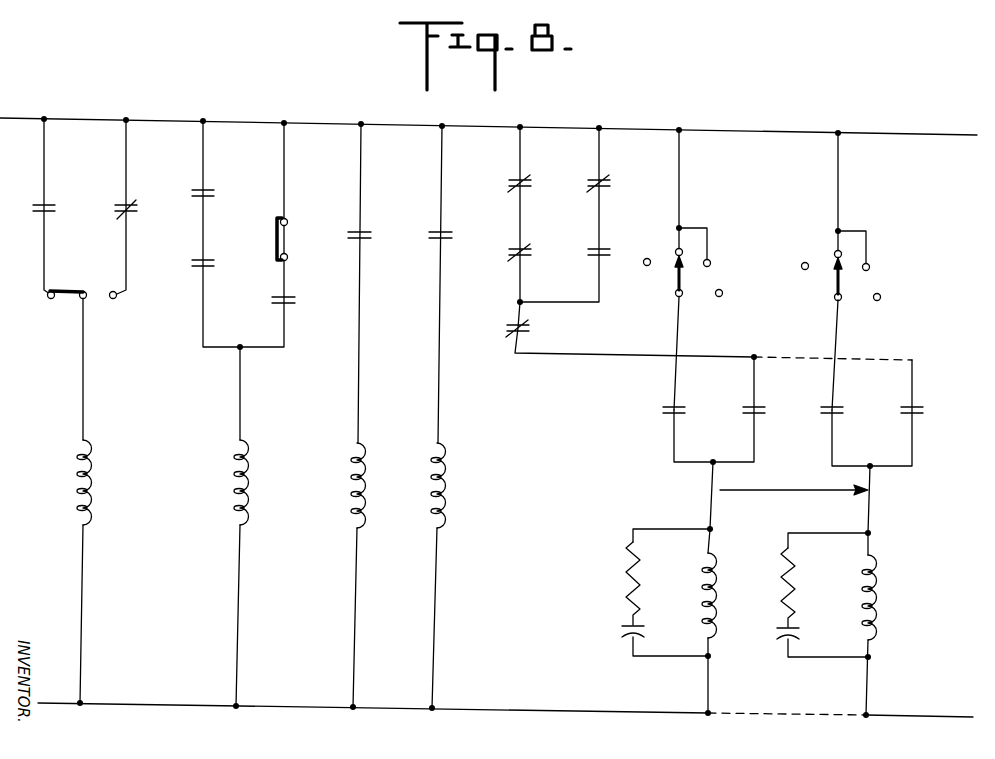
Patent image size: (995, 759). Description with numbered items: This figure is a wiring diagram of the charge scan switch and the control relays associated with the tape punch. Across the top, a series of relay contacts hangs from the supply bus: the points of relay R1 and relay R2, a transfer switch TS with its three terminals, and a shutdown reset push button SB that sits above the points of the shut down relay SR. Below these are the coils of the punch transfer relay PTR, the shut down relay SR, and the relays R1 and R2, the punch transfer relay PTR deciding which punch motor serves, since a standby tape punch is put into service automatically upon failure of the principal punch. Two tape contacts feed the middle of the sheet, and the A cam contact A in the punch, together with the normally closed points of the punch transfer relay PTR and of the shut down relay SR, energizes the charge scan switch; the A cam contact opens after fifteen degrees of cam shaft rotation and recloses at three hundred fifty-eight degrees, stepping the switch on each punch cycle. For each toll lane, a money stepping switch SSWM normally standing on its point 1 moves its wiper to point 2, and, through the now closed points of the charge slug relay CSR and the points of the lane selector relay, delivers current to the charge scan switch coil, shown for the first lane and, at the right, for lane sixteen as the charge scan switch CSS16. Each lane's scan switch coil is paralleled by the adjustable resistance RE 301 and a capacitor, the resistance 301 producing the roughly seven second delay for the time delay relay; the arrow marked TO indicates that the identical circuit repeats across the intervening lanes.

The R1 points of the shut down relay / punch transfer relay R1 is at (53, 206).
The R2 points R2 is at (135, 207).
The transfer switch TS is at (101, 306).
The punch transfer relay PTR is at (101, 501).
The shut down relay SR is at (252, 413).
The shutdown reset push button SB is at (314, 243).
The point 1 of the money stepping switch 1 is at (419, 235).
The point 2 of the money stepping switch 2 is at (450, 417).
The A cam contact A is at (630, 242).
The money stepping switch SSWM is at (792, 270).
The charge slug relay CSR is at (804, 411).
The continuation arrow to lane 16 TO is at (794, 484).
The adjustable resistance RE301 301 is at (700, 587).
The charge scan switch for lane sixteen CSS16 is at (858, 590).